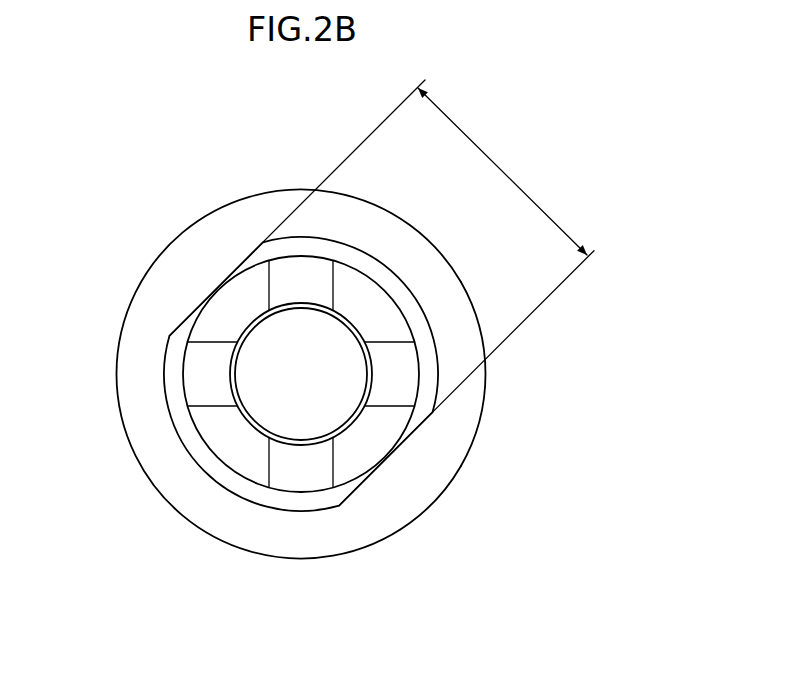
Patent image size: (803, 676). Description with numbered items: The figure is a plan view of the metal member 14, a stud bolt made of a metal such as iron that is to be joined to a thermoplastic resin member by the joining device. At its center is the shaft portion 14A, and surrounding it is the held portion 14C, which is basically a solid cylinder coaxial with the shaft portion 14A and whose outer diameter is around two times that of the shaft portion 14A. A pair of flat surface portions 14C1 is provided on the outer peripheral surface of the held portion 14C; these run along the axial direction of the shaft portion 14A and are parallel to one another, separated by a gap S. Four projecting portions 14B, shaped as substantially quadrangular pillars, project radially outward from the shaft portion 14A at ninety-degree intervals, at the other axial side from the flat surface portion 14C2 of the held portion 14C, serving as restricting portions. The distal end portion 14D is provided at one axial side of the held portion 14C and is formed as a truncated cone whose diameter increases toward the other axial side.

The metal member 14 is at (580, 175).
The shaft portion 14A is at (330, 343).
The projecting portions 14B is at (202, 358).
The held portion 14C is at (172, 433).
The flat surface portions 14C1 is at (247, 258).
The flat surface portion 14C2 is at (367, 448).
The distal end portion 14D is at (490, 390).
The gap S is at (518, 187).